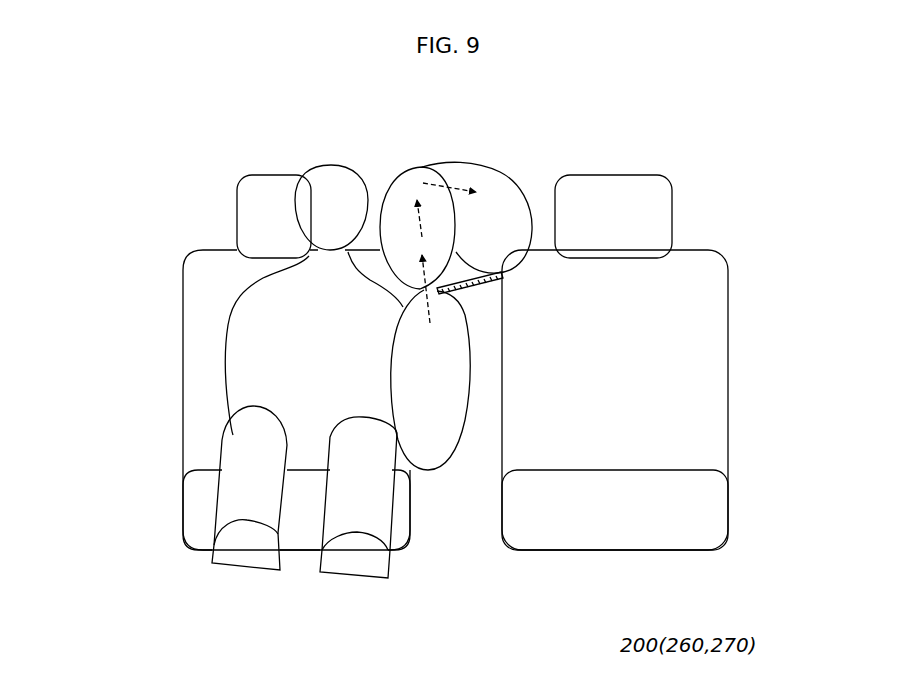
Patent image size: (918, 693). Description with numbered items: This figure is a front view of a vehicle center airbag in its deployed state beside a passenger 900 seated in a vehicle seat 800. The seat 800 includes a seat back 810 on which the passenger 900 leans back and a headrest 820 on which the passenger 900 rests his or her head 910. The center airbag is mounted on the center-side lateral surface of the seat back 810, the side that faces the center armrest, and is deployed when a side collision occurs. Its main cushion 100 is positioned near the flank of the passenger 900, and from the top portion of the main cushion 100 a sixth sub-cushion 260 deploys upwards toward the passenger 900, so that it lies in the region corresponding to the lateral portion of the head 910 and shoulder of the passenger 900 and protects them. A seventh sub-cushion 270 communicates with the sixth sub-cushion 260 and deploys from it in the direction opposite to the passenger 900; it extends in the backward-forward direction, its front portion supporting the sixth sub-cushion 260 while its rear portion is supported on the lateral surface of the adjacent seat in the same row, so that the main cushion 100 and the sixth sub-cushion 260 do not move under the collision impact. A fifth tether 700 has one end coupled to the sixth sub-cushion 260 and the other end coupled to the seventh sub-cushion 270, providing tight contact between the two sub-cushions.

The main cushion 100 is at (445, 425).
The sixth sub-cushion 260 is at (407, 186).
The seventh sub-cushion 270 is at (485, 186).
The fifth tether 700 is at (467, 278).
The vehicle seat 800 is at (170, 404).
The seat back 810 is at (203, 448).
The headrest 820 is at (272, 198).
The passenger 900 is at (205, 330).
The head 910 is at (327, 186).